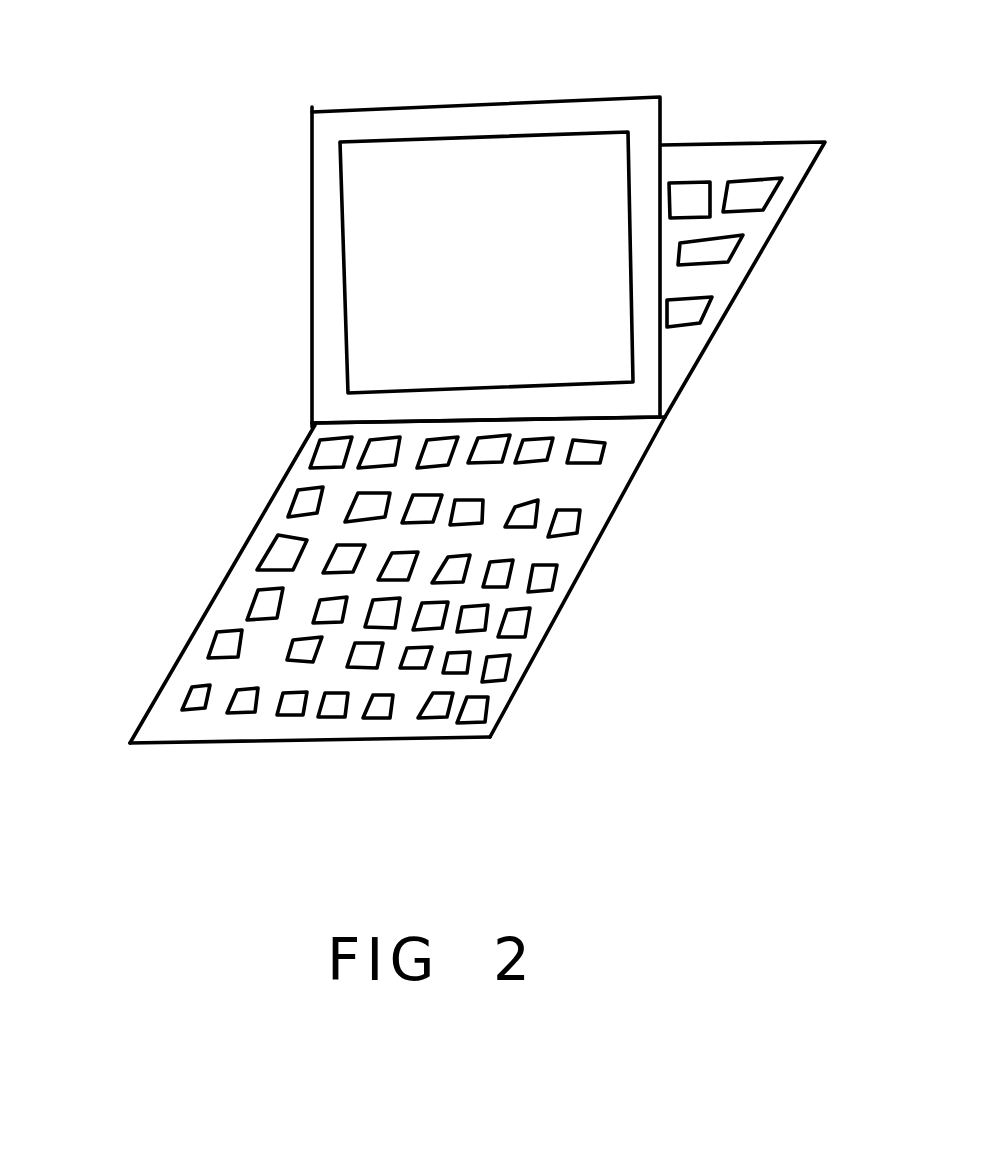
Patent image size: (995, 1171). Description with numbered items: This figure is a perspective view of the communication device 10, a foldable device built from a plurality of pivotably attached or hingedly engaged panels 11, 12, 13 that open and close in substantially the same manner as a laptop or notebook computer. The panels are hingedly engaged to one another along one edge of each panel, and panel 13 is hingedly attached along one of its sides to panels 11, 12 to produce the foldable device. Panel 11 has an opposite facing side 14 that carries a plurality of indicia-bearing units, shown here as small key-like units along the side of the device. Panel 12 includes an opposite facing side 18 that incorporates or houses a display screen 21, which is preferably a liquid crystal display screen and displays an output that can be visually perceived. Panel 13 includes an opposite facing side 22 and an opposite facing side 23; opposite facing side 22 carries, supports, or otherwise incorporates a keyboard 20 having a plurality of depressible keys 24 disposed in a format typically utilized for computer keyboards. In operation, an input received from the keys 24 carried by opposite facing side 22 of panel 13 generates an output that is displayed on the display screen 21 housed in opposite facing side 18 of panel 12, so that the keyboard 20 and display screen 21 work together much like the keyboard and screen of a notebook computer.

The communication device 10 is at (230, 77).
The panel 11 is at (798, 163).
The panel 12 is at (320, 297).
The panel 13 is at (498, 693).
The opposite facing side 14 is at (723, 297).
The opposite facing side 18 is at (627, 120).
The keyboard 20 is at (557, 482).
The display screen 21 is at (368, 203).
The opposite facing side 22 is at (190, 670).
The opposite facing side 23 is at (255, 742).
The depressible keys 24 is at (283, 555).